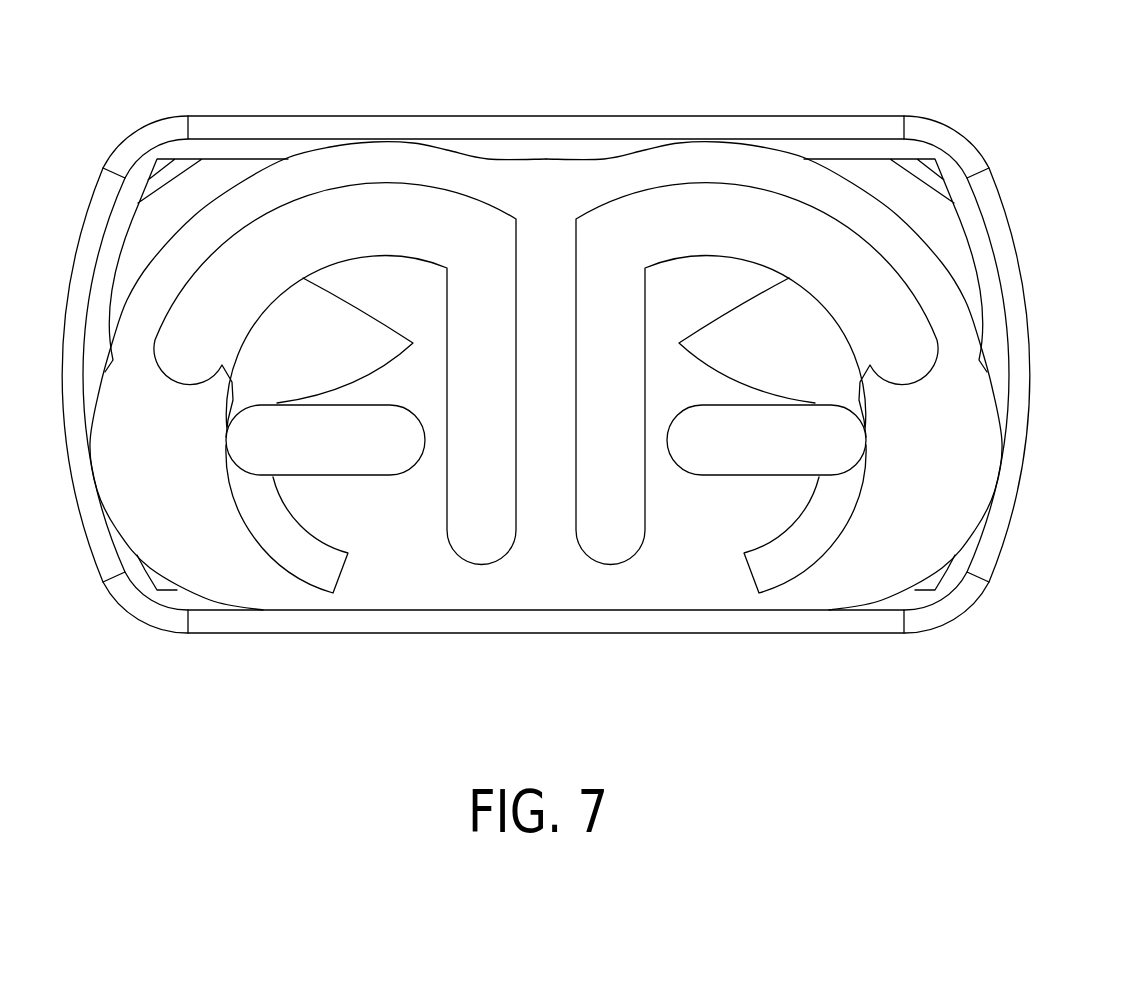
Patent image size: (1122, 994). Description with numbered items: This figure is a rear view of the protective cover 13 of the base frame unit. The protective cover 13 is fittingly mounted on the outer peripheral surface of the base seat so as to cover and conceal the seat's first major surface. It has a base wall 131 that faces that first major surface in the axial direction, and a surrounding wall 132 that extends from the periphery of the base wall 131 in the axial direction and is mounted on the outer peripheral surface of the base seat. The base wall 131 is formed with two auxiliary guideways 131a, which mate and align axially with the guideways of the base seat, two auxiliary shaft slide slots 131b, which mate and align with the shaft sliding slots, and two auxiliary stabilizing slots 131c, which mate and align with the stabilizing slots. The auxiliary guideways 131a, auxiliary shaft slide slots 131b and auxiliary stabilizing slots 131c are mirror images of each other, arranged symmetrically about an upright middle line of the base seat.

The protective cover 13 is at (578, 378).
The base wall 131 is at (548, 182).
The auxiliary guideways 131a is at (403, 223).
The auxiliary shaft slide slots 131b is at (390, 440).
The auxiliary stabilizing slots 131c is at (308, 557).
The surrounding wall 132 is at (1018, 253).